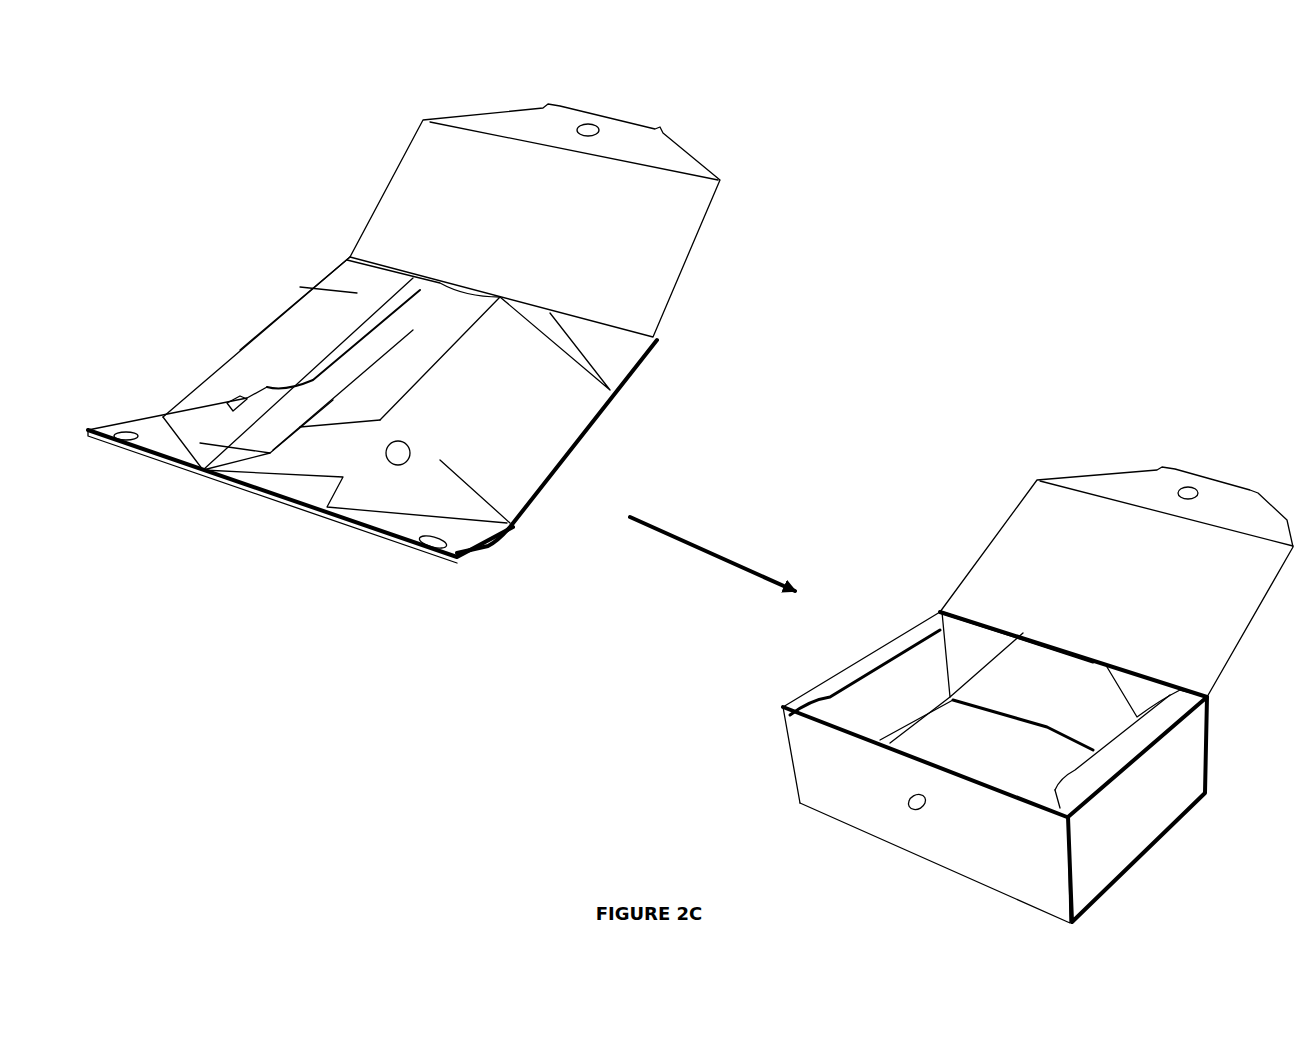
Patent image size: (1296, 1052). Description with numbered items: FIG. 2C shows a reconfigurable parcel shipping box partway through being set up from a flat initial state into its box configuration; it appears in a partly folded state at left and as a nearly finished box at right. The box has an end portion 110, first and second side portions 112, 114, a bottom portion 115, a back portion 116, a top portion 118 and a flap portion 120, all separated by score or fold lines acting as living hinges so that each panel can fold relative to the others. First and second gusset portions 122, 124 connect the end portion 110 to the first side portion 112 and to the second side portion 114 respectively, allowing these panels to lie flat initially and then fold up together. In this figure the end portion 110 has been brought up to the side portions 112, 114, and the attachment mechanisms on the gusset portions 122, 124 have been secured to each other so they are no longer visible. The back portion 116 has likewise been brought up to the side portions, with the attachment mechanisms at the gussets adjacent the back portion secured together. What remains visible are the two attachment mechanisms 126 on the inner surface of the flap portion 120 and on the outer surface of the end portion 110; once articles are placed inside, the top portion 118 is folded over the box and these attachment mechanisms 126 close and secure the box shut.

The end portion 110 is at (277, 485).
The first side portion 112 is at (220, 367).
The second side portion 114 is at (540, 497).
The bottom portion 115 is at (377, 362).
The back portion 116 is at (435, 310).
The top portion 118 is at (554, 224).
The flap portion 120 is at (675, 155).
The first gusset portion 122 is at (146, 484).
The second gusset portion 124 is at (440, 577).
The attachment mechanism 126 is at (588, 124).